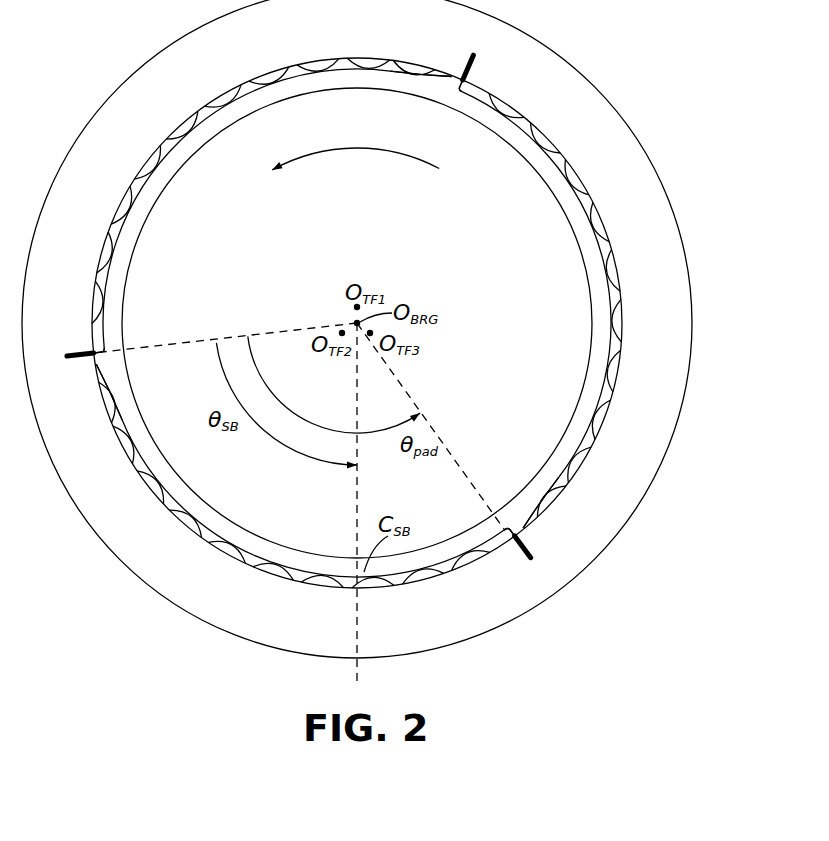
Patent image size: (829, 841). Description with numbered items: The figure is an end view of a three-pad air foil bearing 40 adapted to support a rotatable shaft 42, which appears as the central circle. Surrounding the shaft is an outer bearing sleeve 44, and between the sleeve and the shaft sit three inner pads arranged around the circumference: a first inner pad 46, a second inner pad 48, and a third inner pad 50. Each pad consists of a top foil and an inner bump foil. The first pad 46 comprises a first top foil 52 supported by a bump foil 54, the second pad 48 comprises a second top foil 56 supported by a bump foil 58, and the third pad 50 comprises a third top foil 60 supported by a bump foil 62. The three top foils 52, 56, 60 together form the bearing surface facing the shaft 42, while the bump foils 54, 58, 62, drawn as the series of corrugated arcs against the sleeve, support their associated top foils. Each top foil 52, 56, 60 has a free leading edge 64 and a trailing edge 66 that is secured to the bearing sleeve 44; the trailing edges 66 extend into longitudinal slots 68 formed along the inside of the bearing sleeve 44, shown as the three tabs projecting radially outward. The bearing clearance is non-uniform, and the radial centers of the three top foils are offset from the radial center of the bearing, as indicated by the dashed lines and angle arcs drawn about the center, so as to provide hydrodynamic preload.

The air foil bearing 40 is at (359, 329).
The rotatable shaft 42 is at (518, 293).
The outer bearing sleeve 44 is at (656, 175).
The first inner pad 46 is at (627, 263).
The second inner pad 48 is at (376, 314).
The third inner pad 50 is at (305, 484).
The first top foil 52 is at (548, 178).
The bump foil 54 is at (612, 397).
The second top foil 56 is at (150, 186).
The bump foil 58 is at (206, 117).
The third top foil 60 is at (229, 538).
The bump foil 62 is at (428, 575).
The free leading edge 64 is at (115, 370).
The trailing edge 66 is at (114, 343).
The longitudinal slot 68 is at (63, 346).